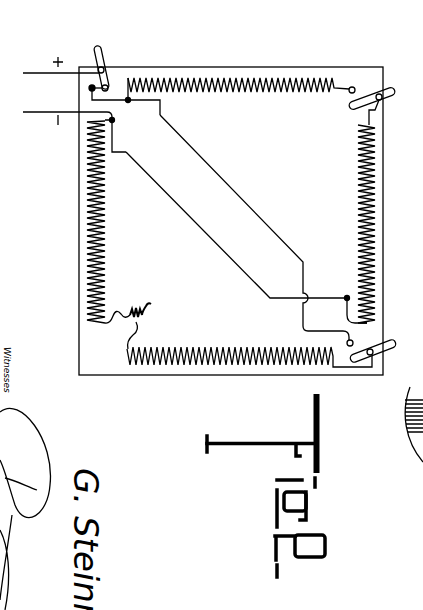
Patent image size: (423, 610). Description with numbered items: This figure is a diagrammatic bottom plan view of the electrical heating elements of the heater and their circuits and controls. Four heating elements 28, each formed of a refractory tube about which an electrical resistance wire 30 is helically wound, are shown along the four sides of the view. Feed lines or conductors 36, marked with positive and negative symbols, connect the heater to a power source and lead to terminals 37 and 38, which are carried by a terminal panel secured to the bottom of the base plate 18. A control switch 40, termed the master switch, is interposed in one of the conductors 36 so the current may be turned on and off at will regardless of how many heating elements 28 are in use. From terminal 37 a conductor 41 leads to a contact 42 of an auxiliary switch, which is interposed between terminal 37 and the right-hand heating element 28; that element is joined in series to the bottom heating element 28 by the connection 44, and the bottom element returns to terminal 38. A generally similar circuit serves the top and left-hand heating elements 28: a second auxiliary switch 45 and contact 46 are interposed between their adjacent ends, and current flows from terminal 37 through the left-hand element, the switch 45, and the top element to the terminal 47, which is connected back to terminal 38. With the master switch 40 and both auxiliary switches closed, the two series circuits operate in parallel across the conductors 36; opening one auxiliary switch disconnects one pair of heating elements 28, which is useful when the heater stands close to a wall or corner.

The base plate 18 is at (240, 368).
The heating element 28 is at (247, 80).
The electrical resistance wire 30 is at (193, 81).
The feed lines or conductors 36 is at (33, 112).
The terminal 37 is at (130, 102).
The terminal 38 is at (113, 122).
The control switch 40 is at (108, 82).
The conductor 41 is at (215, 173).
The contact 42 is at (201, 224).
The connection 44 is at (150, 298).
The second auxiliary switch 45 is at (381, 100).
The contact 46 is at (352, 86).
The terminal 47 is at (347, 296).